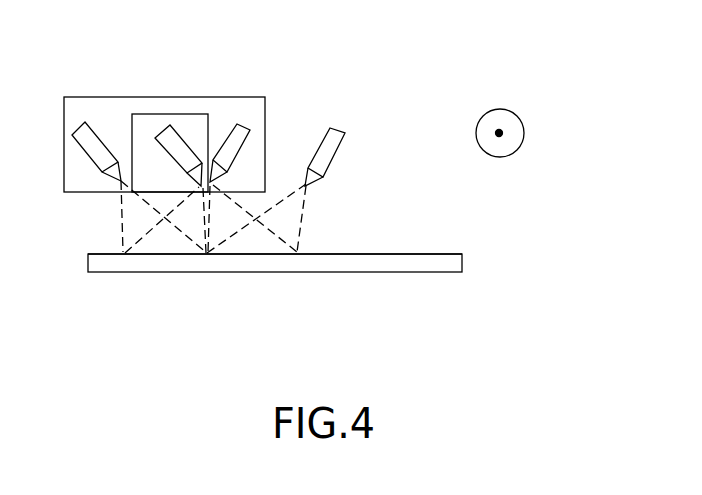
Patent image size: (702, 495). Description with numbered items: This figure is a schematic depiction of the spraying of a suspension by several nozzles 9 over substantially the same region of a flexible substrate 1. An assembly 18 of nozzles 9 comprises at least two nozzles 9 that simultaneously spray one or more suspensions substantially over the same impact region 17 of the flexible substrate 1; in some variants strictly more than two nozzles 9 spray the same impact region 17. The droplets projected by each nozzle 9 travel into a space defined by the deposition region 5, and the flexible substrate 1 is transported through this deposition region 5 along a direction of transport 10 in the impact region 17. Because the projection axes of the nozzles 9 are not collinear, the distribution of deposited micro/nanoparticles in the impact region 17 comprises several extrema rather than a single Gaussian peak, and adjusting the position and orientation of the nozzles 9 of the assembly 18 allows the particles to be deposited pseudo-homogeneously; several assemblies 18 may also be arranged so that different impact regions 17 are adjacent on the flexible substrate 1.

The flexible substrate 1 is at (395, 265).
The deposition region 5 is at (250, 238).
The nozzles 9 is at (173, 133).
The direction of transport 10 is at (499, 133).
The impact region 17 is at (162, 255).
The assembly of nozzles 18 is at (113, 97).